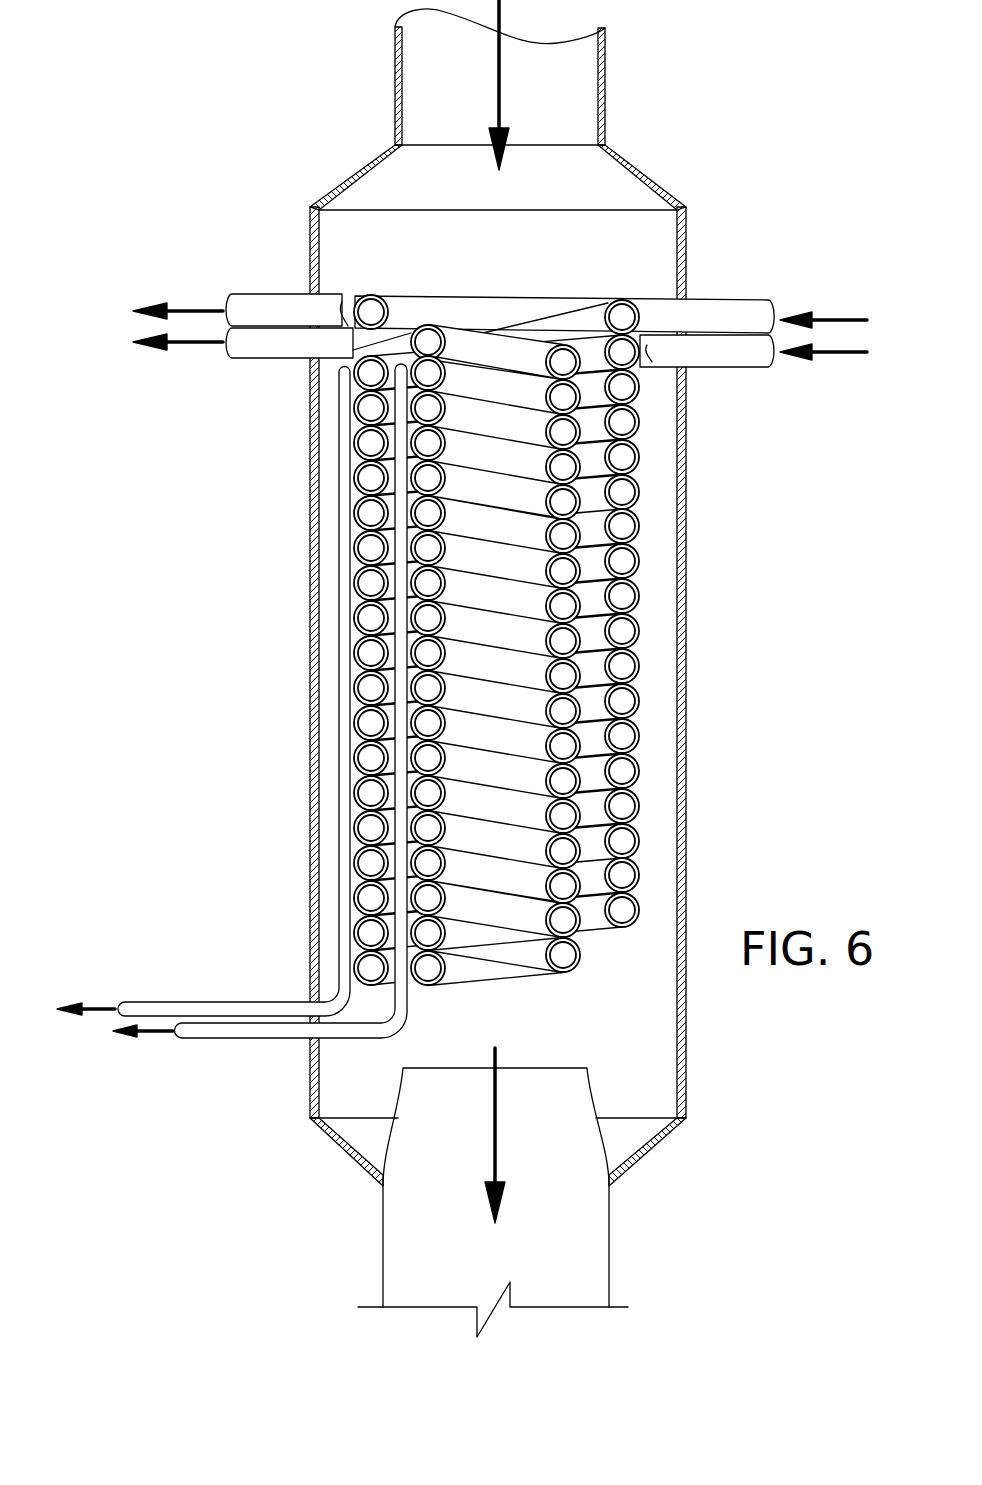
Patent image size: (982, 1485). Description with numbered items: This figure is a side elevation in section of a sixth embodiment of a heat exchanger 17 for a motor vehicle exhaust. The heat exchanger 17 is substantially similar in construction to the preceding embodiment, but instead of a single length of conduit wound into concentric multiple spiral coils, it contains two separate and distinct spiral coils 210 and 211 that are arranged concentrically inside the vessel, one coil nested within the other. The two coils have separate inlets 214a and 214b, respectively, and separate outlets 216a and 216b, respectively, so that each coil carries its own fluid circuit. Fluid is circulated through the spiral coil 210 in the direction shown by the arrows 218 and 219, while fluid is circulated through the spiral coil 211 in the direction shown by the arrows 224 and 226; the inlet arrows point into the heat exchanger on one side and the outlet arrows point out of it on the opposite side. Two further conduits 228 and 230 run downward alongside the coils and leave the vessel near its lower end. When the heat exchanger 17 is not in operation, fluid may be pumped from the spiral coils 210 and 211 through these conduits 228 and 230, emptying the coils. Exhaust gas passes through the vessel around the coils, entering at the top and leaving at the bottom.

The heat exchanger 17 is at (216, 188).
The spiral coil 210 is at (625, 635).
The spiral coil 211 is at (565, 747).
The inlet 214a is at (728, 313).
The inlet 214b is at (727, 353).
The outlet 216a is at (292, 352).
The outlet 216b is at (281, 305).
The arrow 218 is at (848, 314).
The arrow 224 is at (848, 360).
The arrow 226 is at (200, 304).
The arrow 219 is at (204, 352).
The conduit 228 is at (343, 672).
The conduit 230 is at (402, 792).